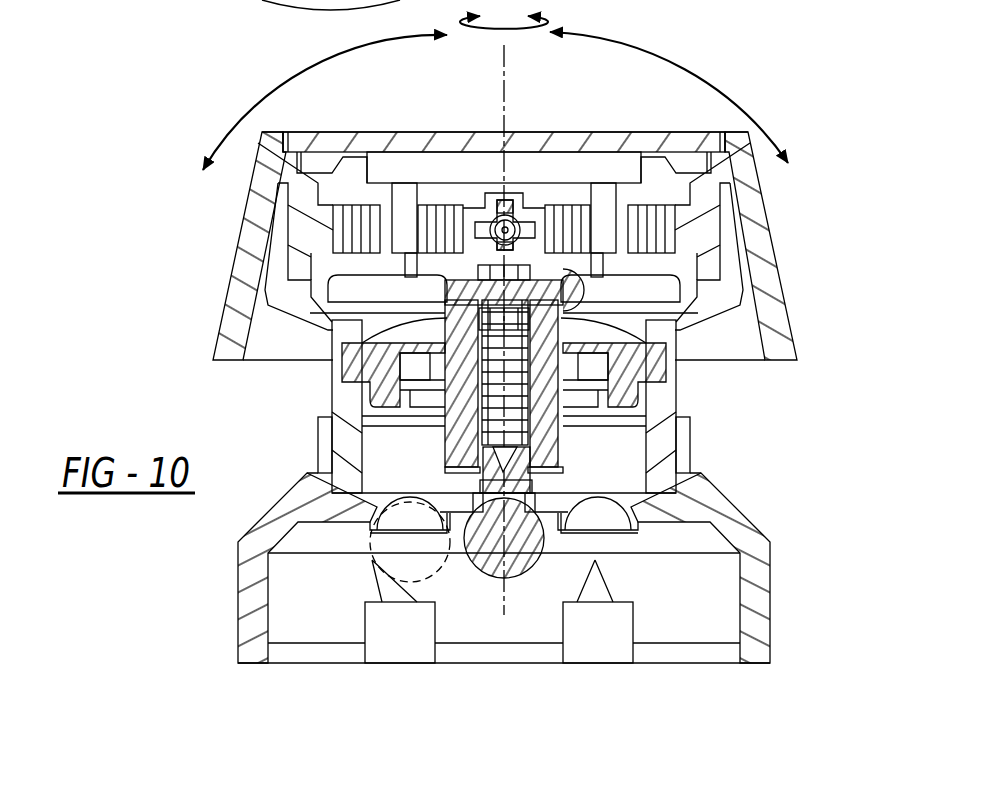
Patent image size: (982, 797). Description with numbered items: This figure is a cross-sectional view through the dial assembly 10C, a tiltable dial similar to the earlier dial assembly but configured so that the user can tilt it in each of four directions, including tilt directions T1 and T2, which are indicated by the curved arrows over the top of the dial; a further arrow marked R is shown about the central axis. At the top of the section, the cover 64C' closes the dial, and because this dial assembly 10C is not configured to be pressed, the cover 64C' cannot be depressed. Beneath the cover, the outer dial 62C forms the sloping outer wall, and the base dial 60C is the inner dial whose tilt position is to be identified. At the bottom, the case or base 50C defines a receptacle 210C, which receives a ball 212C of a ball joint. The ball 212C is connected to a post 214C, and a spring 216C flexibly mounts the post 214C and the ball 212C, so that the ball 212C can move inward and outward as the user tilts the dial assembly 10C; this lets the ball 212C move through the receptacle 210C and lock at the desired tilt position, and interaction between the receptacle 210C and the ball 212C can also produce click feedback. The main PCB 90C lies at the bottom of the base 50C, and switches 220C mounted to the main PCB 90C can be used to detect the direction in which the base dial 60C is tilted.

The dial assembly 10C is at (162, 200).
The cover 64C' is at (504, 112).
The outer dial 62C is at (775, 305).
The base dial 60C is at (710, 298).
The spring 216C is at (497, 353).
The post 214C is at (485, 405).
The ball 212C is at (520, 542).
The receptacle 210C is at (453, 533).
The base 50C is at (252, 573).
The main PCB 90C is at (710, 652).
The switches 220C is at (393, 647).
The tilt direction T1 is at (325, 102).
The tilt direction T2 is at (669, 97).
The rotation direction R is at (504, 14).